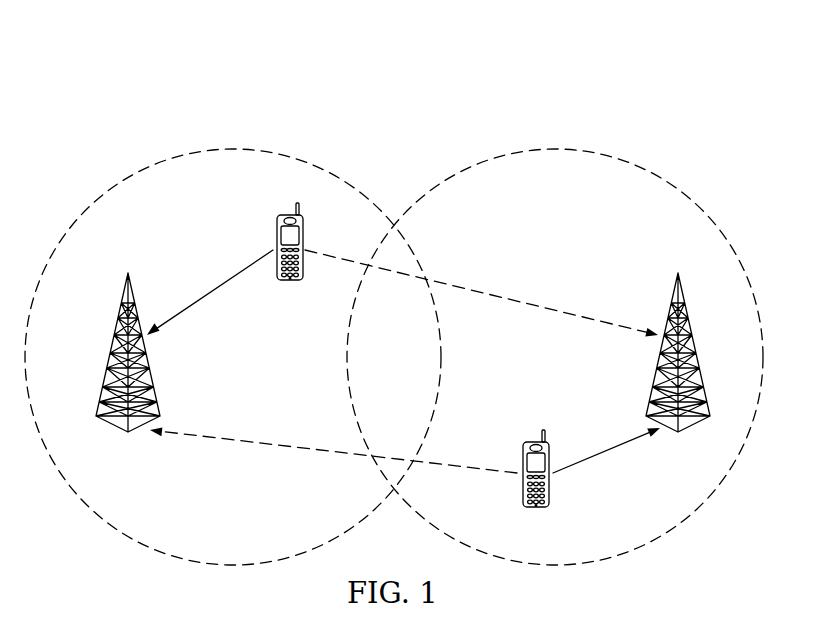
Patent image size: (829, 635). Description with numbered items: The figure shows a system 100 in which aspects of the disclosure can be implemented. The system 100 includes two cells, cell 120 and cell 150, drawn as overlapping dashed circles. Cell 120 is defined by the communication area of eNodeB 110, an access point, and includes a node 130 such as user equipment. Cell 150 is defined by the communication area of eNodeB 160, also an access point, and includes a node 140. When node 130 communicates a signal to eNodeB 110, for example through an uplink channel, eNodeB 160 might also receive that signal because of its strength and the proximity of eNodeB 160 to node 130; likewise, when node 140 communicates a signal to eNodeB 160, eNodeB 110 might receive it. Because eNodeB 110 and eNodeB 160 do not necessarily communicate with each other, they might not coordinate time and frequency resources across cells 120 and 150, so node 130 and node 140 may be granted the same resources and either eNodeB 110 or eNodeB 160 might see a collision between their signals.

The system 100 is at (548, 58).
The eNodeB 110 is at (109, 352).
The cell 120 is at (141, 157).
The node 130 is at (290, 214).
The node 140 is at (535, 508).
The cell 150 is at (653, 160).
The eNodeB 160 is at (696, 351).